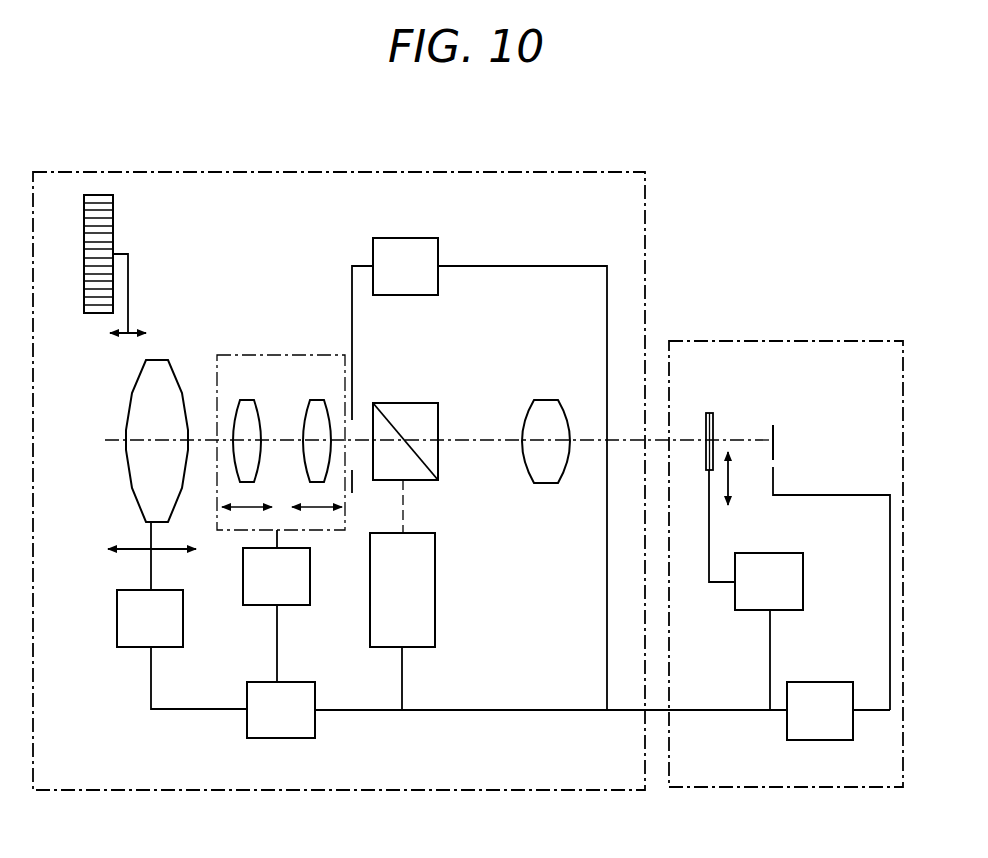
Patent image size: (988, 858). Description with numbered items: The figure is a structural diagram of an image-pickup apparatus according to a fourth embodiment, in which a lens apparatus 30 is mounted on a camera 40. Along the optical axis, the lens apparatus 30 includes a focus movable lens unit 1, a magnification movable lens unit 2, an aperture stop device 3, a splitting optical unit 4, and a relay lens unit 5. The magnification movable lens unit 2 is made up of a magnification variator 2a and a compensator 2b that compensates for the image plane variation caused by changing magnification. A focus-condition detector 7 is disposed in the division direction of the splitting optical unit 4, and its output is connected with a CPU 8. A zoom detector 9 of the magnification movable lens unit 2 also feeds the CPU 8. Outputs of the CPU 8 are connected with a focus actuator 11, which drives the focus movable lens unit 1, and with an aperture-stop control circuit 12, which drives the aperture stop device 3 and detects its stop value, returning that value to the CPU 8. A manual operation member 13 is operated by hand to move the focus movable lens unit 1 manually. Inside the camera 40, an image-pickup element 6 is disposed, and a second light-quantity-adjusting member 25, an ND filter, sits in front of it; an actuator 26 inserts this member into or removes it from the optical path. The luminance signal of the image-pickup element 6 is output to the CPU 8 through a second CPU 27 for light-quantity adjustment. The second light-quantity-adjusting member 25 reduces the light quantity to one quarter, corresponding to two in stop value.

The focus movable lens unit 1 is at (159, 360).
The magnification movable lens unit 2 is at (278, 416).
The magnification variator 2a is at (246, 400).
The compensator 2b is at (316, 400).
The aperture stop device 3 is at (353, 400).
The splitting optical unit 4 is at (415, 403).
The relay lens unit 5 is at (546, 400).
The image-pickup element 6 is at (773, 428).
The focus-condition detector 7 is at (435, 623).
The CPU 8 is at (247, 722).
The zoom detector 9 is at (252, 605).
The focus actuator 11 is at (117, 612).
The aperture-stop control circuit 12 is at (418, 238).
The manual operation member 13 is at (114, 237).
The second light-quantity-adjusting member 25 is at (713, 425).
The actuator 26 is at (803, 578).
The second CPU 27 is at (787, 724).
The lens apparatus 30 is at (540, 172).
The camera 40 is at (812, 341).